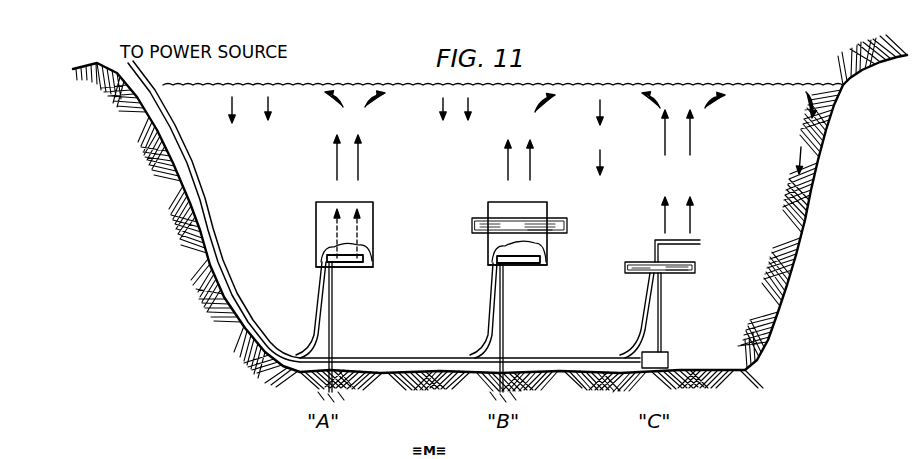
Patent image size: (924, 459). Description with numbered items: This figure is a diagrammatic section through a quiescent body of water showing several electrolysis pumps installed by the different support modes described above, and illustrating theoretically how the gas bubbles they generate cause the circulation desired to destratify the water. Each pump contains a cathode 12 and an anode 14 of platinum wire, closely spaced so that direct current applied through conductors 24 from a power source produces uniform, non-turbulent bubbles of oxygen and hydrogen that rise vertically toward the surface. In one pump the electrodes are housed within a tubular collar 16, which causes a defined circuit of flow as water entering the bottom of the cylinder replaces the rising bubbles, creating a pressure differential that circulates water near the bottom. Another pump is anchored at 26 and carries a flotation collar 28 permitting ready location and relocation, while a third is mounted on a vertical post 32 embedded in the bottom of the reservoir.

The cathode 12 is at (360, 253).
The anode 14 is at (368, 267).
The tubular collar 16 is at (315, 232).
The conductors 24 is at (313, 323).
The anchor 26 is at (672, 358).
The flotation collar 28 is at (471, 226).
The vertical post 32 is at (333, 319).